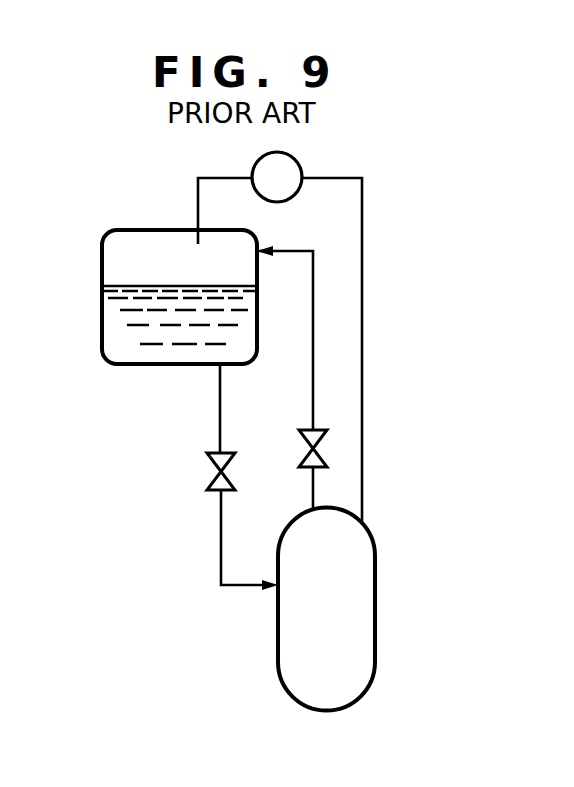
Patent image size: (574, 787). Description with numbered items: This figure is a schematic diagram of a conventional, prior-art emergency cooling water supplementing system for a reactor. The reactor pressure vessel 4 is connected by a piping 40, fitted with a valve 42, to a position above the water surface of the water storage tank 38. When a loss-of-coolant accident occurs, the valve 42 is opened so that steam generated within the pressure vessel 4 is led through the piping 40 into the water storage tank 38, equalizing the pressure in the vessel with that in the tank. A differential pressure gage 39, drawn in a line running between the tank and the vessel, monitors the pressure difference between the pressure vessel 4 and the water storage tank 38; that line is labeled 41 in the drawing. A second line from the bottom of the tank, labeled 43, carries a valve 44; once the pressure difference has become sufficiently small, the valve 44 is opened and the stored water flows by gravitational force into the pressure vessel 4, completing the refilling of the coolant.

The reactor pressure vessel 4 is at (375, 572).
The water storage tank 38 is at (143, 230).
The differential pressure gage 39 is at (300, 165).
The piping 40 is at (338, 308).
The pipe 41 is at (363, 355).
The valve 42 is at (300, 430).
The supply pipe 43 is at (220, 407).
The valve 44 is at (237, 463).